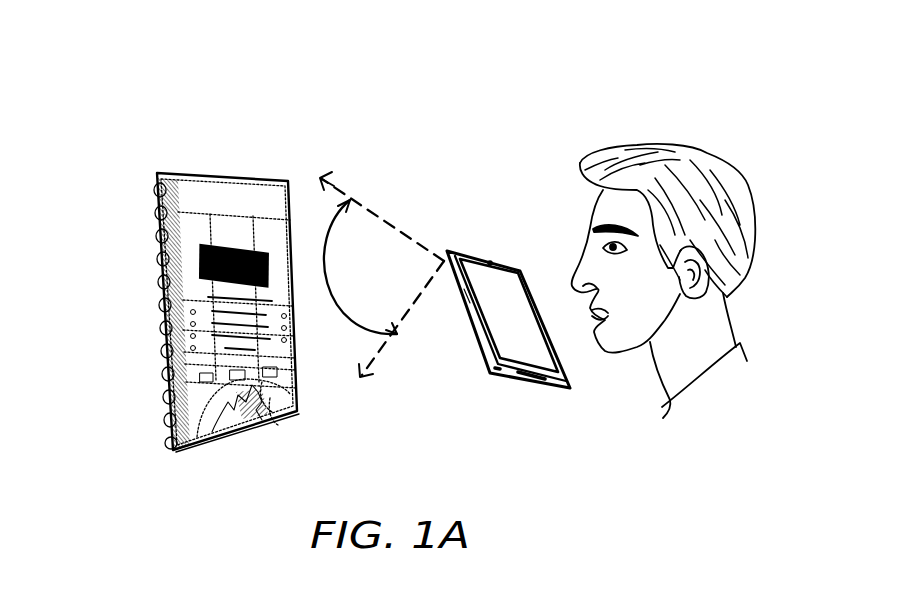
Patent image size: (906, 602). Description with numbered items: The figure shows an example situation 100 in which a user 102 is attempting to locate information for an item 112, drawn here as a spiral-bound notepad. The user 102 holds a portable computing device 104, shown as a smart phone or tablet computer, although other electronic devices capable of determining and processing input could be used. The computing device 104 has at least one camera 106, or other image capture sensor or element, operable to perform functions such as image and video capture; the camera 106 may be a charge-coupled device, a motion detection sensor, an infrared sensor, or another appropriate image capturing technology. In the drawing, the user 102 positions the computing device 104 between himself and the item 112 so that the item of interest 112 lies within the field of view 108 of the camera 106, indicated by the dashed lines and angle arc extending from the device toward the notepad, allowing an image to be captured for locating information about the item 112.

The situation 100 is at (617, 98).
The user 102 is at (575, 197).
The computing device 104 is at (501, 380).
The camera 106 is at (488, 263).
The field of view 108 is at (360, 267).
The item 112 is at (128, 252).